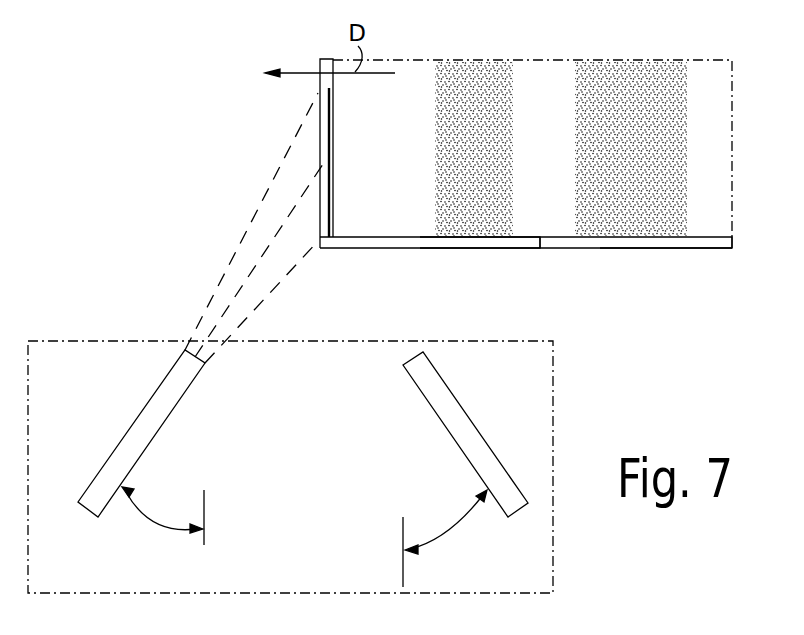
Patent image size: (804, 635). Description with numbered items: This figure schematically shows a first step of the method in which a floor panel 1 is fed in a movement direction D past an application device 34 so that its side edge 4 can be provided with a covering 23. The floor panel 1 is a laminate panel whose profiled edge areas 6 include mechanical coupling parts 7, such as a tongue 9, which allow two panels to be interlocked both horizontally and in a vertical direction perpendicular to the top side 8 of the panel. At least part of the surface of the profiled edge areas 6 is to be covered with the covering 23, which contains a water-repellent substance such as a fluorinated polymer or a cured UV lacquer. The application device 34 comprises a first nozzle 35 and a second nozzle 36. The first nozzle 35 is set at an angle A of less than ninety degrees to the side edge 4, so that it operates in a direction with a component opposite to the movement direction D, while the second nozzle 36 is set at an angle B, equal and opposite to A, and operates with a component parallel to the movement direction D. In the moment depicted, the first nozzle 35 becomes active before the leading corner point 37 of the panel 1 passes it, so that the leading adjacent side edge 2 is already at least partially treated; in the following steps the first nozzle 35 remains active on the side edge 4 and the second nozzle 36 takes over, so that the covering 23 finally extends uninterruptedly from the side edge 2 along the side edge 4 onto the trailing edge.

The floor panel 1 is at (635, 80).
The side edge 2 is at (318, 87).
The side edge 4 is at (564, 237).
The profiled edge areas 6 is at (632, 265).
The mechanical coupling parts 7 is at (478, 240).
The top side 8 is at (526, 157).
The tongue 9 is at (397, 240).
The covering 23 is at (327, 160).
The application device 34 is at (553, 398).
The first nozzle 35 is at (122, 455).
The second nozzle 36 is at (463, 440).
The leading corner point 37 is at (319, 240).